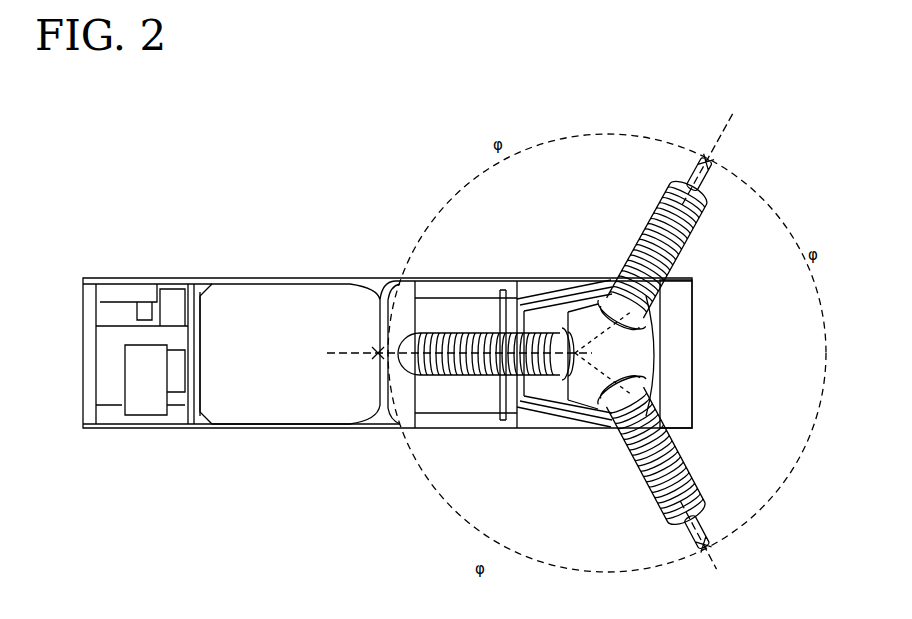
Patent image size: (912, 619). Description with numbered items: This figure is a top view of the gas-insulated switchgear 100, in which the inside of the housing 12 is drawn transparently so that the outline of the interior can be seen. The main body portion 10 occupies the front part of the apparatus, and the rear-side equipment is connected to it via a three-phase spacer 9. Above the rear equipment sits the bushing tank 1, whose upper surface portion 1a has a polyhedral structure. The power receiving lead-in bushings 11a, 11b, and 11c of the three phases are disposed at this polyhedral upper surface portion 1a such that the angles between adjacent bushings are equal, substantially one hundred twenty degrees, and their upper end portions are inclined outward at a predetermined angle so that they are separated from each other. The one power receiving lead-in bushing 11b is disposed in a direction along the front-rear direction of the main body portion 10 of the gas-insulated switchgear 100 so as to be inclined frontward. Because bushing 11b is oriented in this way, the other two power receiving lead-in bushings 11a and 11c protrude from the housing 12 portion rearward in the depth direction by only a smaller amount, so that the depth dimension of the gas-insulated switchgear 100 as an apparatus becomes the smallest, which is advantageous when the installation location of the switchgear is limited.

The gas-insulated switchgear 100 is at (231, 205).
The bushing tank 1 is at (660, 331).
The upper surface portion 1a is at (572, 290).
The three-phase spacer 9 is at (490, 288).
The main body portion 10 is at (272, 430).
The power receiving lead-in bushing 11a is at (680, 265).
The power receiving lead-in bushing 11b is at (486, 375).
The power receiving lead-in bushing 11c is at (690, 457).
The housing 12 is at (165, 430).